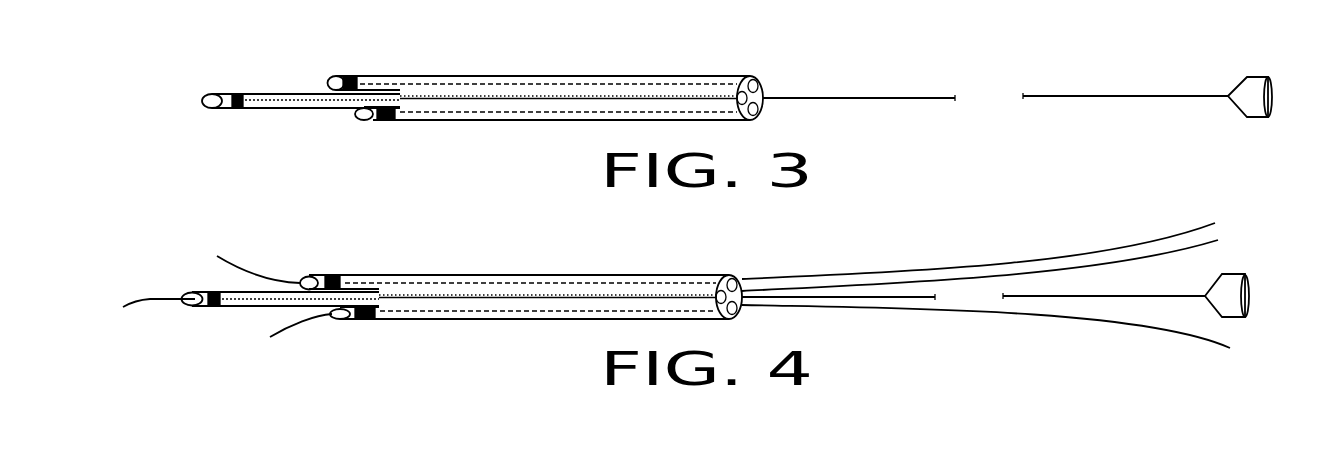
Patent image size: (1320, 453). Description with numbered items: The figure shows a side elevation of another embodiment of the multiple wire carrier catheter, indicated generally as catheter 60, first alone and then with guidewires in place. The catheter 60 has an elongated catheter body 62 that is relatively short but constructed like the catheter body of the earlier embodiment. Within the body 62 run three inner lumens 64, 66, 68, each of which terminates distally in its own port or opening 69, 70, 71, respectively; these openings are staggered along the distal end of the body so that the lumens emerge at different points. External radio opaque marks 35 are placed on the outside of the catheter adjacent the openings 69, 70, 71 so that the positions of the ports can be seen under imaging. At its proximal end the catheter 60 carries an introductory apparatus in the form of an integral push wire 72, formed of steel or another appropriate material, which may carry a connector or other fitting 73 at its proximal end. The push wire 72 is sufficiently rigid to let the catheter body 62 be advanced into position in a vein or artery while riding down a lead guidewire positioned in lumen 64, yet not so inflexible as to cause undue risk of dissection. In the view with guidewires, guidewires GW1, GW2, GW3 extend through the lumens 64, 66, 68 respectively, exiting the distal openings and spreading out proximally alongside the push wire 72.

In FIG. 3, the external radio opaque marks 35 is at (238, 94).
In FIG. 4, the external radio opaque marks 35 is at (217, 307).
In FIG. 3, the catheter 60 is at (672, 60).
In FIG. 4, the catheter 60 is at (753, 267).
In FIG. 3, the catheter body 62 is at (550, 73).
In FIG. 4, the catheter body 62 is at (527, 272).
In FIG. 3, the inner lumen 64 is at (278, 109).
In FIG. 4, the inner lumen 64 is at (257, 308).
In FIG. 3, the inner lumen 66 is at (387, 80).
In FIG. 4, the inner lumen 66 is at (365, 278).
In FIG. 3, the inner lumen 68 is at (437, 114).
In FIG. 4, the inner lumen 68 is at (413, 309).
In FIG. 3, the port or opening 69 is at (208, 97).
In FIG. 4, the port or opening 69 is at (190, 296).
In FIG. 3, the port or opening 70 is at (328, 85).
In FIG. 4, the port or opening 70 is at (304, 281).
In FIG. 3, the port or opening 71 is at (362, 121).
In FIG. 4, the port or opening 71 is at (342, 320).
In FIG. 3, the push wire 72 is at (815, 93).
In FIG. 4, the push wire 72 is at (873, 297).
In FIG. 3, the connector or other fitting 73 is at (1252, 80).
In FIG. 4, the connector or other fitting 73 is at (1230, 280).
In FIG. 4, the guidewire GW1 is at (150, 297).
In FIG. 4, the guidewire GW2 is at (247, 270).
In FIG. 4, the guidewire GW3 is at (295, 333).